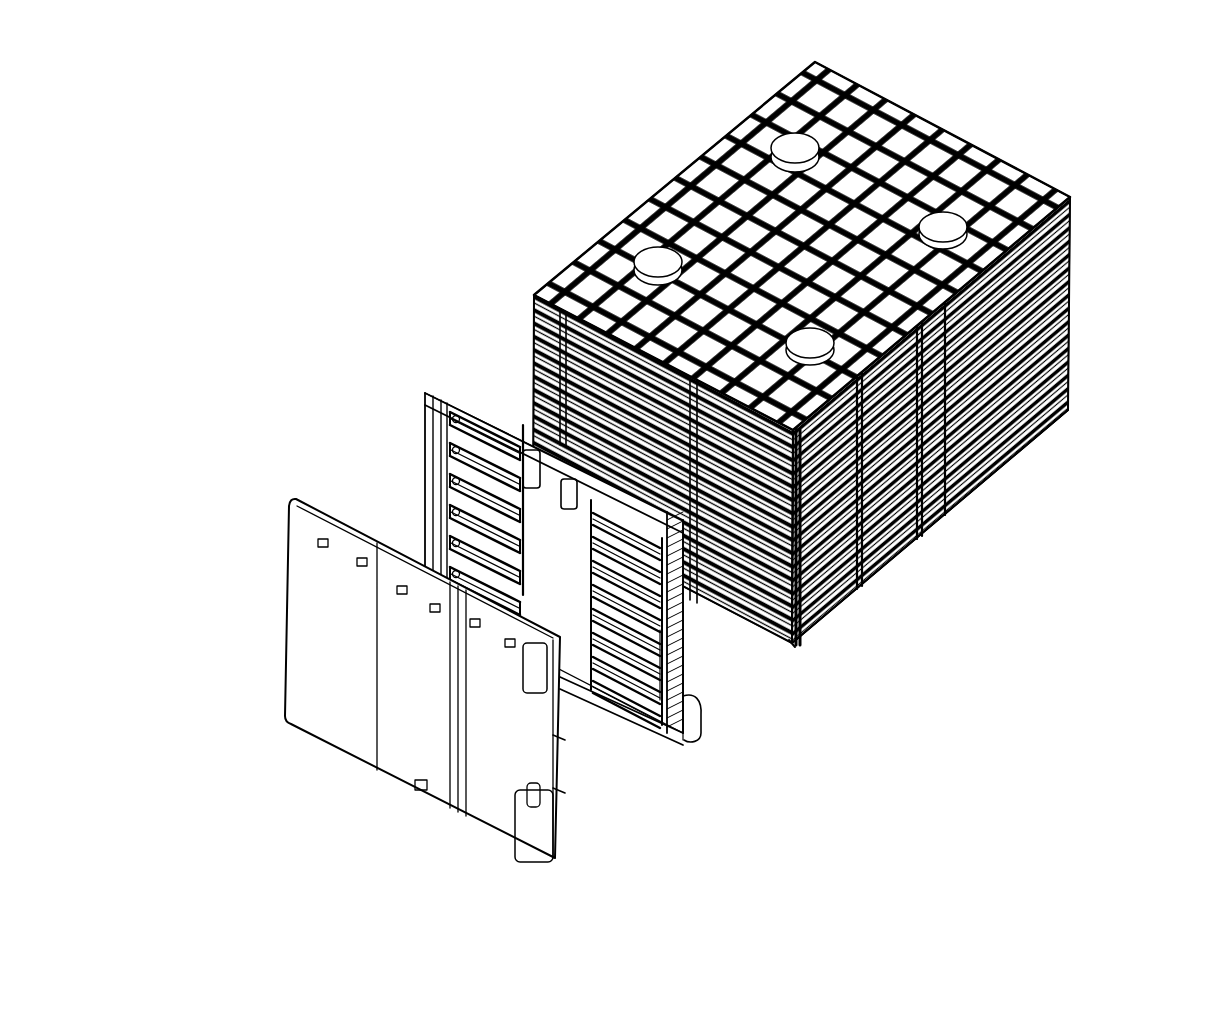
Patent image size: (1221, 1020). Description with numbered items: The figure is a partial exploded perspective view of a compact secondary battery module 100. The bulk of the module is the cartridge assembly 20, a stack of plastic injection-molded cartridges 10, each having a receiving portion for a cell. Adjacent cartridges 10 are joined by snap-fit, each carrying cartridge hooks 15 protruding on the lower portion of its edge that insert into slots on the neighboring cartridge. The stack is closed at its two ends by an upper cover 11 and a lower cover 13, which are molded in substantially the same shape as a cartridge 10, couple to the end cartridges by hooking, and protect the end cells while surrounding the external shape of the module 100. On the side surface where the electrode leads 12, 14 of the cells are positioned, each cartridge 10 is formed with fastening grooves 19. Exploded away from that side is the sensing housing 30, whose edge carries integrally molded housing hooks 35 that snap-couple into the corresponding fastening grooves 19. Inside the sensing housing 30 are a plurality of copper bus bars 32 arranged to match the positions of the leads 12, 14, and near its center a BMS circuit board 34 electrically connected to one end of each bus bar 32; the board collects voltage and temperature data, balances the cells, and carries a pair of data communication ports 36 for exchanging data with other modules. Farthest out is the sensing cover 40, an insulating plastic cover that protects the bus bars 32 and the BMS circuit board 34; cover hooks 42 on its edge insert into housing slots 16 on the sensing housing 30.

The secondary battery module 100 is at (693, 460).
The cartridge 10 is at (814, 368).
The upper cover 11 is at (887, 124).
The electrode lead 12 is at (544, 292).
The lower cover 13 is at (987, 477).
The electrode lead 14 is at (727, 620).
The cartridge hook 15 is at (843, 597).
The housing slot 16 is at (703, 635).
The fastening groove 19 is at (803, 640).
The cartridge assembly 20 is at (948, 548).
The sensing housing 30 is at (576, 575).
The bus bar 32 is at (455, 405).
The BMS circuit board 34 is at (425, 447).
The housing hook 35 is at (703, 702).
The data communication port 36 is at (518, 415).
The sensing cover 40 is at (415, 680).
The cover hook 42 is at (578, 752).